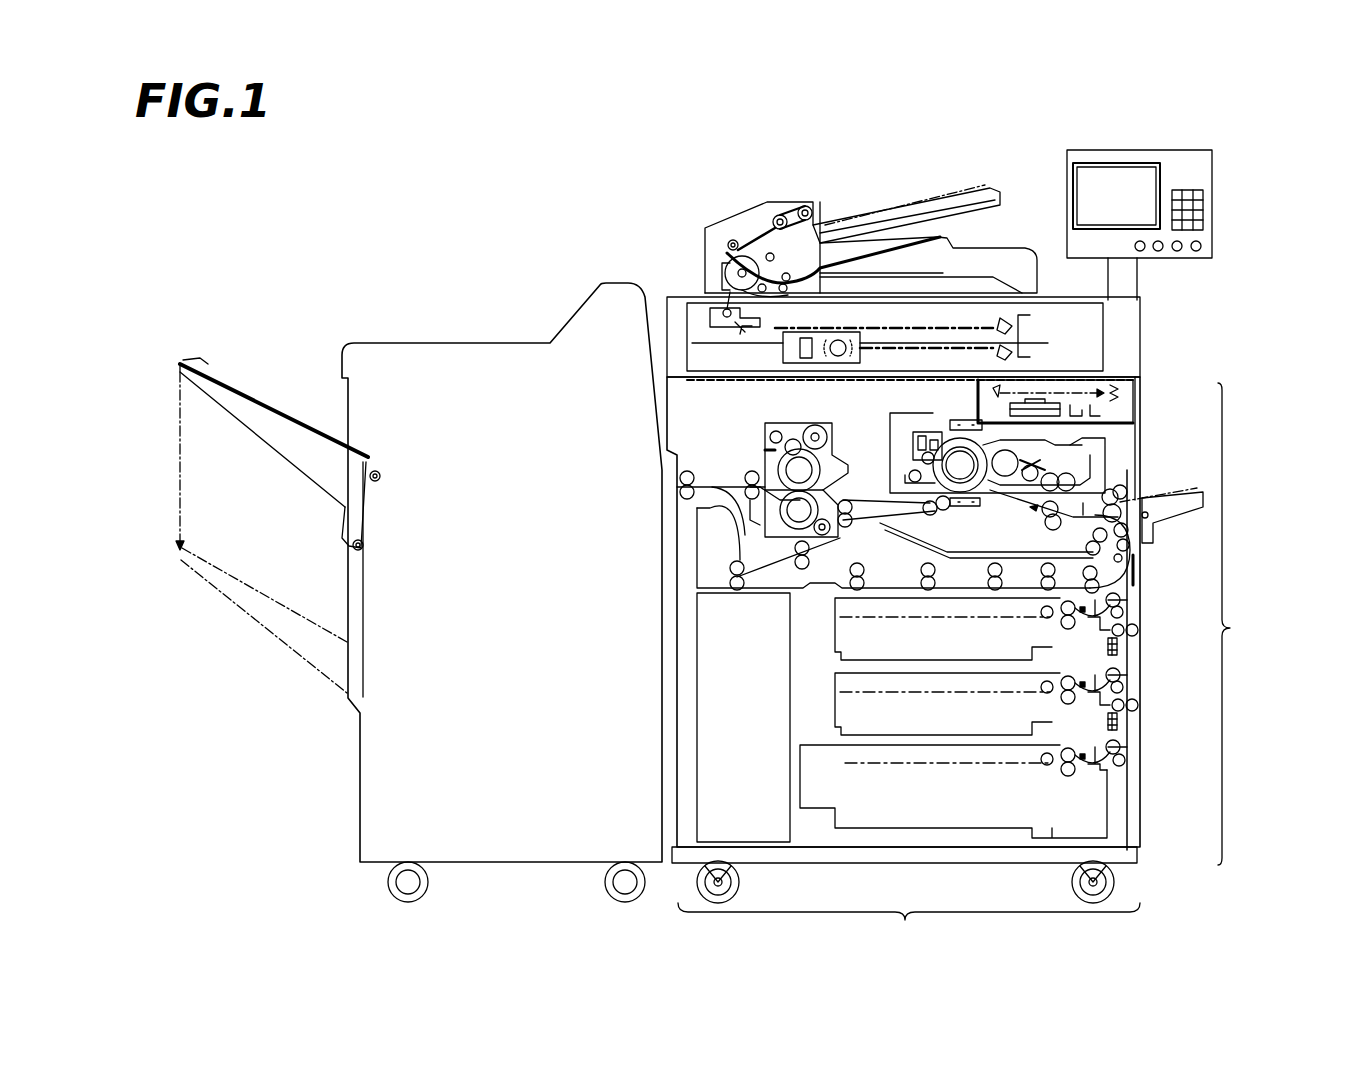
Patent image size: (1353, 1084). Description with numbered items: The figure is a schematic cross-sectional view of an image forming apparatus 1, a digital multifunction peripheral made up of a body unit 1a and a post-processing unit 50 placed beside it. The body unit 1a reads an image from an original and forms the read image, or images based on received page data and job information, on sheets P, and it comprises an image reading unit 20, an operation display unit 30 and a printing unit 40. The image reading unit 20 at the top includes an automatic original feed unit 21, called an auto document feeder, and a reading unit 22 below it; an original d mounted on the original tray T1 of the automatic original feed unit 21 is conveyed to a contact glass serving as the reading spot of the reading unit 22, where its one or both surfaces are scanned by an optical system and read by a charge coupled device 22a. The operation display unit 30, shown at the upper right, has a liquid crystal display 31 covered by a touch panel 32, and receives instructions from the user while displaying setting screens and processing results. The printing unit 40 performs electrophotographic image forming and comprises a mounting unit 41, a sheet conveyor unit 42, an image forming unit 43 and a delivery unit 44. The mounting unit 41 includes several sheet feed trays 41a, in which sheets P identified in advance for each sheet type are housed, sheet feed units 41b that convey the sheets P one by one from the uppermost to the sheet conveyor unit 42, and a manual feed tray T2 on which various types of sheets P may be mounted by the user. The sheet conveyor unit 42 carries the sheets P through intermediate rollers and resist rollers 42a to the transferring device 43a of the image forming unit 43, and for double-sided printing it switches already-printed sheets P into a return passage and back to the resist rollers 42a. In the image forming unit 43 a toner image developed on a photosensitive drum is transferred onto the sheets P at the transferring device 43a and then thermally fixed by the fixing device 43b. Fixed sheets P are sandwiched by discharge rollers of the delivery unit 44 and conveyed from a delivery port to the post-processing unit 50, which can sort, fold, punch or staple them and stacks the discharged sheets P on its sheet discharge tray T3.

The image forming apparatus 1 is at (852, 128).
The body unit 1a is at (906, 904).
The image reading unit 20 is at (773, 157).
The automatic original feed unit 21 is at (734, 218).
The reading unit 22 is at (1145, 345).
The charge coupled device (CCD) 22a is at (785, 362).
The operation display unit 30 is at (1176, 150).
The liquid crystal display (LCD) 31 is at (1100, 163).
The touch panel 32 is at (1140, 195).
The printing unit 40 is at (1201, 621).
The mounting unit 41 is at (1143, 659).
The sheet feed tray 41a is at (833, 613).
The sheet feed unit 41b is at (1055, 617).
The sheet conveyor unit 42 is at (1137, 573).
The resist rollers 42a is at (1048, 515).
The image forming unit 43 is at (1098, 440).
The transferring device 43a is at (970, 505).
The fixing device 43b is at (800, 423).
The delivery unit 44 is at (698, 455).
The post-processing unit 50 is at (480, 232).
The original d is at (923, 200).
The sheets P is at (1149, 500).
The original tray T1 is at (1000, 204).
The manual feed tray T2 is at (1190, 488).
The sheet discharge tray T3 is at (210, 361).